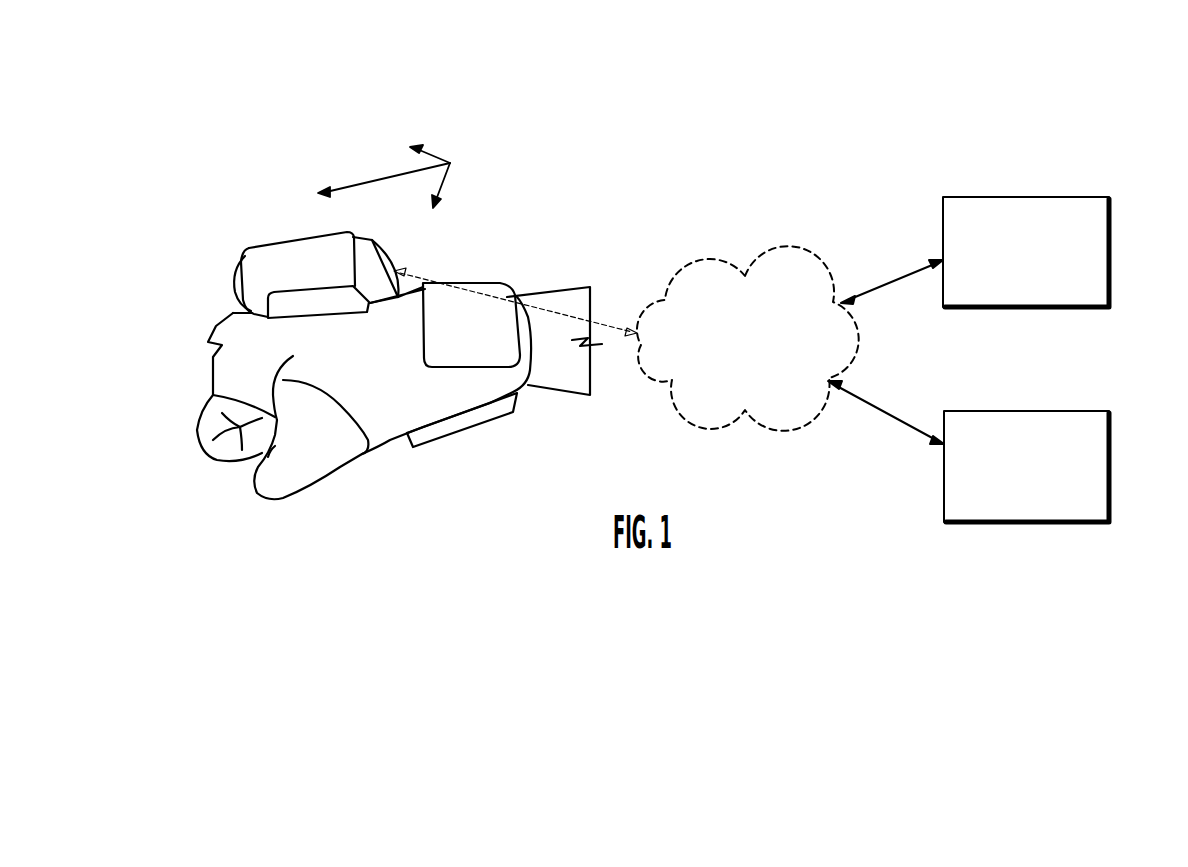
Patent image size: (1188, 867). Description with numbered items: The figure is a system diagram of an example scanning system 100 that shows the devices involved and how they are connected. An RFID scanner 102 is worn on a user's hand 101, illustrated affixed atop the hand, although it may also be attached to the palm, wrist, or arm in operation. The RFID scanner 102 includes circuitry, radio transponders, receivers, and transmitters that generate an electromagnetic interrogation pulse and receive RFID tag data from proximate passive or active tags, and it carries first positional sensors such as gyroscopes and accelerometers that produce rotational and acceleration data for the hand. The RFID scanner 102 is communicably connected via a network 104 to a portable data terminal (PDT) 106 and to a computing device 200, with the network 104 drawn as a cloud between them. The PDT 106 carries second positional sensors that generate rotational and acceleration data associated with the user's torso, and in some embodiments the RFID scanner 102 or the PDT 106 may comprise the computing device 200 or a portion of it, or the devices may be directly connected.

The scanning system 100 is at (1040, 44).
The user's hand 101 is at (199, 432).
The RFID scanner 102 is at (238, 248).
The network 104 is at (787, 258).
The portable data terminal (PDT) 106 is at (1108, 197).
The computing device 200 is at (1108, 411).